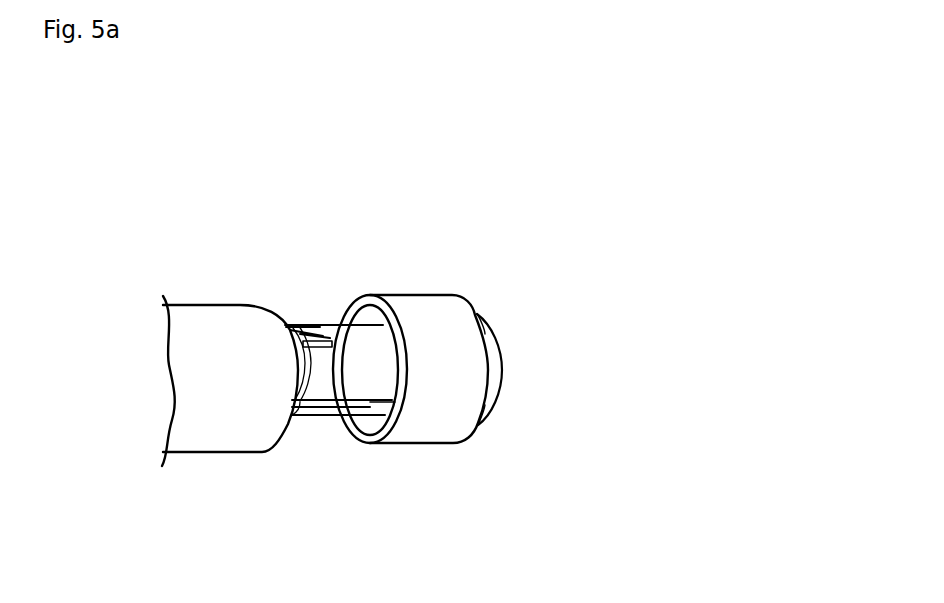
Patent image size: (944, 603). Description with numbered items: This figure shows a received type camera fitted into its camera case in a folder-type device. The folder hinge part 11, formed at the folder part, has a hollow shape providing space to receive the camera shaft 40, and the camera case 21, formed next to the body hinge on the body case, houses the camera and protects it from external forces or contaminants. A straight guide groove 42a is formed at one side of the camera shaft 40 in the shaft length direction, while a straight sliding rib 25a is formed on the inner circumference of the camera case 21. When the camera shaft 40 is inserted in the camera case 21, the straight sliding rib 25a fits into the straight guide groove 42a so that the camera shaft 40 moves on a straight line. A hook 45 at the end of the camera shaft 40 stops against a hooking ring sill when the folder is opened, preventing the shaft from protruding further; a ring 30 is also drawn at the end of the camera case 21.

The folder hinge part 11 is at (217, 342).
The camera shaft 40 is at (362, 343).
The hook 45 is at (295, 325).
The straight guide groove 42a is at (343, 435).
The straight sliding rib 25a is at (395, 405).
The camera case 21 is at (462, 388).
The ring 30 is at (497, 346).